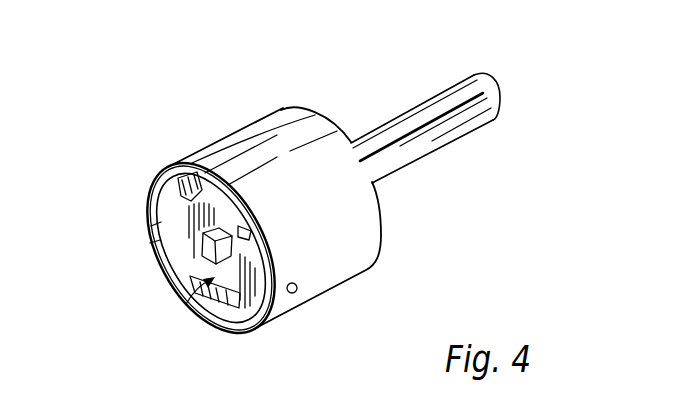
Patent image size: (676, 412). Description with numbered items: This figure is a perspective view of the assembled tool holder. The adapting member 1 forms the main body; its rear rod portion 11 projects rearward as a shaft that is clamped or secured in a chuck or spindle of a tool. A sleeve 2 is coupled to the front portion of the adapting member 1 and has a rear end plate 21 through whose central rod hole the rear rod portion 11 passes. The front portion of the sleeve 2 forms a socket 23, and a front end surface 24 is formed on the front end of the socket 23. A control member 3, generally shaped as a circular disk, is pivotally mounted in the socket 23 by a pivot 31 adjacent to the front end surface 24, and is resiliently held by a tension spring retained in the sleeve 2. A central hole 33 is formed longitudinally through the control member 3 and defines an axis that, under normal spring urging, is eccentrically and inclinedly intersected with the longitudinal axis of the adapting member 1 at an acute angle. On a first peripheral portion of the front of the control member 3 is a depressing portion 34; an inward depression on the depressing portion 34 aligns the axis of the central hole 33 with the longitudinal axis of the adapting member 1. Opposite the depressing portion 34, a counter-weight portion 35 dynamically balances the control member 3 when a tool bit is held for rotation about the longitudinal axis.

The adapting member 1 is at (398, 106).
The rear rod portion 11 is at (445, 96).
The sleeve 2 is at (288, 100).
The rear end plate 21 is at (380, 217).
The socket 23 is at (157, 244).
The front end surface 24 is at (150, 212).
The control member 3 is at (190, 293).
The pivot 31 is at (296, 292).
The central hole 33 is at (203, 265).
The depressing portion 34 is at (210, 328).
The counter-weight portion 35 is at (177, 168).